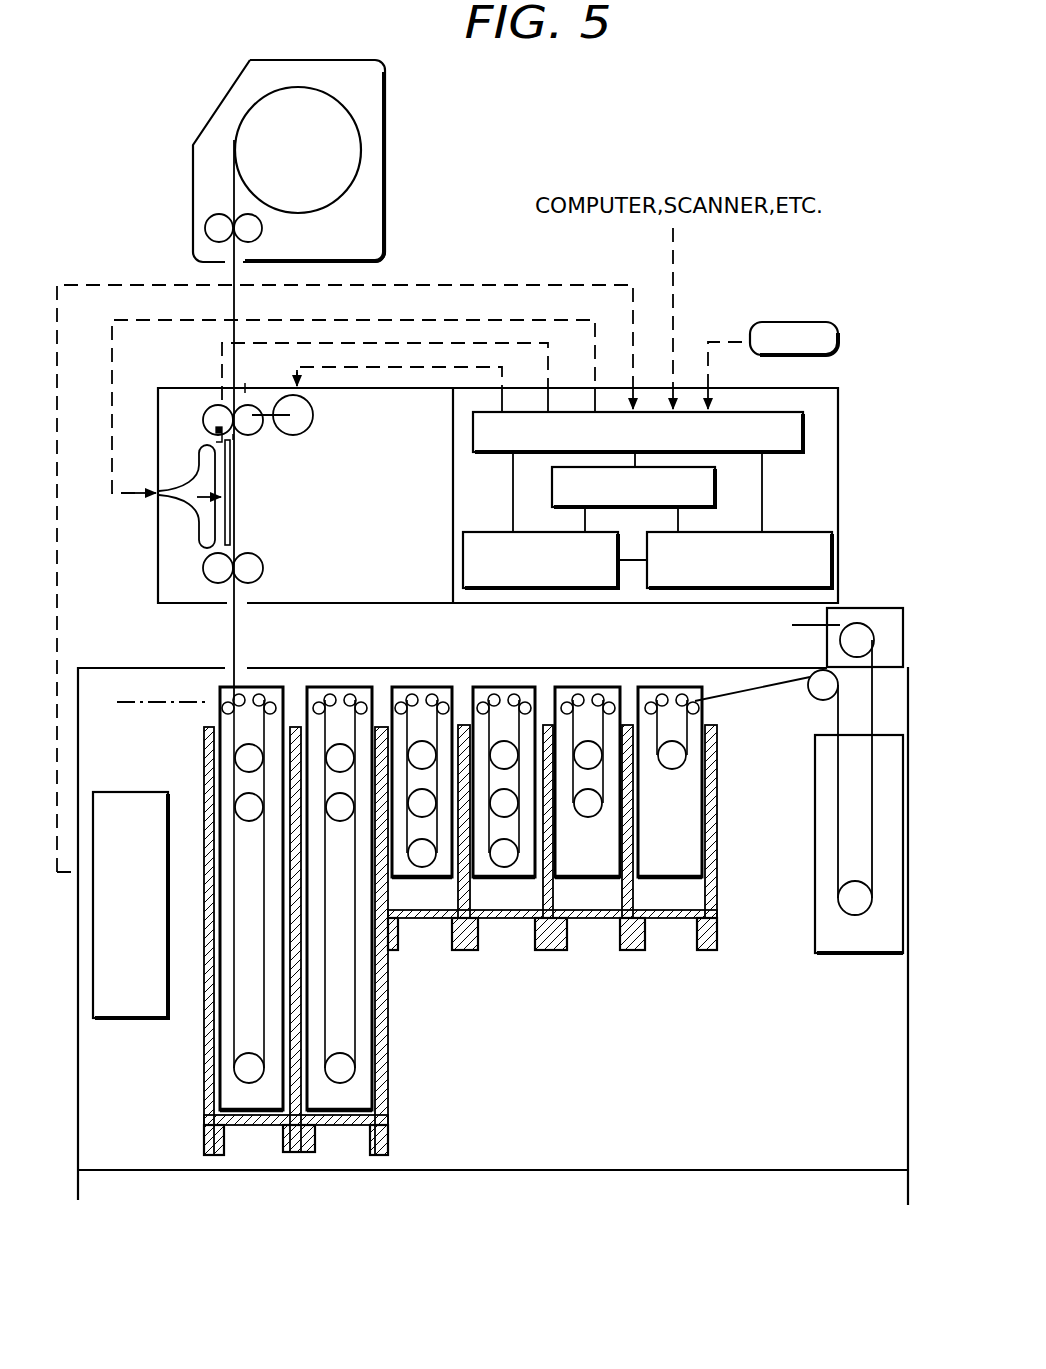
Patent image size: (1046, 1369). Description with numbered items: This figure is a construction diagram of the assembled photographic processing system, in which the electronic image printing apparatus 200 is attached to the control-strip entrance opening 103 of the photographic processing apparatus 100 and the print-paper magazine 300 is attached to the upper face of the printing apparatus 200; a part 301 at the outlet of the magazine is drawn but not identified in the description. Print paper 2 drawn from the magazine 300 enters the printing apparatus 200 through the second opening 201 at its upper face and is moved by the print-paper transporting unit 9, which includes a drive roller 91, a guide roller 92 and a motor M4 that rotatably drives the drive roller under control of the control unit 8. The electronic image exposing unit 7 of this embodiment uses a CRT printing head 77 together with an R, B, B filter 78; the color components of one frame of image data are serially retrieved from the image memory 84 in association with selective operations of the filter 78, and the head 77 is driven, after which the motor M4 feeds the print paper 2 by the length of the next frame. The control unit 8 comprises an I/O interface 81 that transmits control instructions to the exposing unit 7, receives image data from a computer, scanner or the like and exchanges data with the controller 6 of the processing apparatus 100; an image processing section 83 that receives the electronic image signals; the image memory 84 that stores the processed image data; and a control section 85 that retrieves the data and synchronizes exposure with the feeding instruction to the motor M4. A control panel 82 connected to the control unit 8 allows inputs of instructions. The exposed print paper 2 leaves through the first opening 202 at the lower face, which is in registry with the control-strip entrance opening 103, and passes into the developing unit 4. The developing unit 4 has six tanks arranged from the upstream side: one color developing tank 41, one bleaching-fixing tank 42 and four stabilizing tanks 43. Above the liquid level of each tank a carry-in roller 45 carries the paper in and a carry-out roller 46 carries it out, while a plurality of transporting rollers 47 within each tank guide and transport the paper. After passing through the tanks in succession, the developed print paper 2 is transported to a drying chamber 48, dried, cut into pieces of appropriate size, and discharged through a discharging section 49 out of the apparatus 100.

The print-paper magazine 300 is at (401, 226).
The cassette outlet rollers 301 is at (248, 256).
The print paper 2 is at (233, 632).
The electronic image printing apparatus 200 is at (470, 615).
The control unit 8 is at (827, 457).
The I/O interface 81 is at (783, 452).
The control section 85 is at (552, 497).
The image memory 84 is at (599, 590).
The image processing section 83 is at (727, 590).
The control panel 82 is at (806, 335).
The second opening 201 is at (221, 391).
The drive roller 91 is at (247, 410).
The motor M4 is at (304, 419).
The print-paper transporting unit 9 is at (242, 434).
The R, B, B filter 78 is at (231, 475).
The CRT printing head 77 is at (208, 520).
The electronic image exposing unit 7 is at (180, 522).
The guide roller 92 is at (250, 565).
The first opening 202 is at (248, 603).
The photographic processing apparatus 100 is at (211, 1198).
The control-strip entrance opening 103 is at (224, 668).
The controller 6 is at (145, 1018).
The discharging section 49 is at (878, 607).
The drying chamber 48 is at (826, 929).
The bleaching-fixing tank 42 is at (366, 1050).
The developing unit 4 is at (667, 974).
The stabilizing tanks 43 is at (498, 897).
The color developing tank 41 is at (250, 1098).
The transporting rollers 47 is at (244, 767).
The carry-in roller 45 is at (238, 699).
The carry-out roller 46 is at (258, 700).